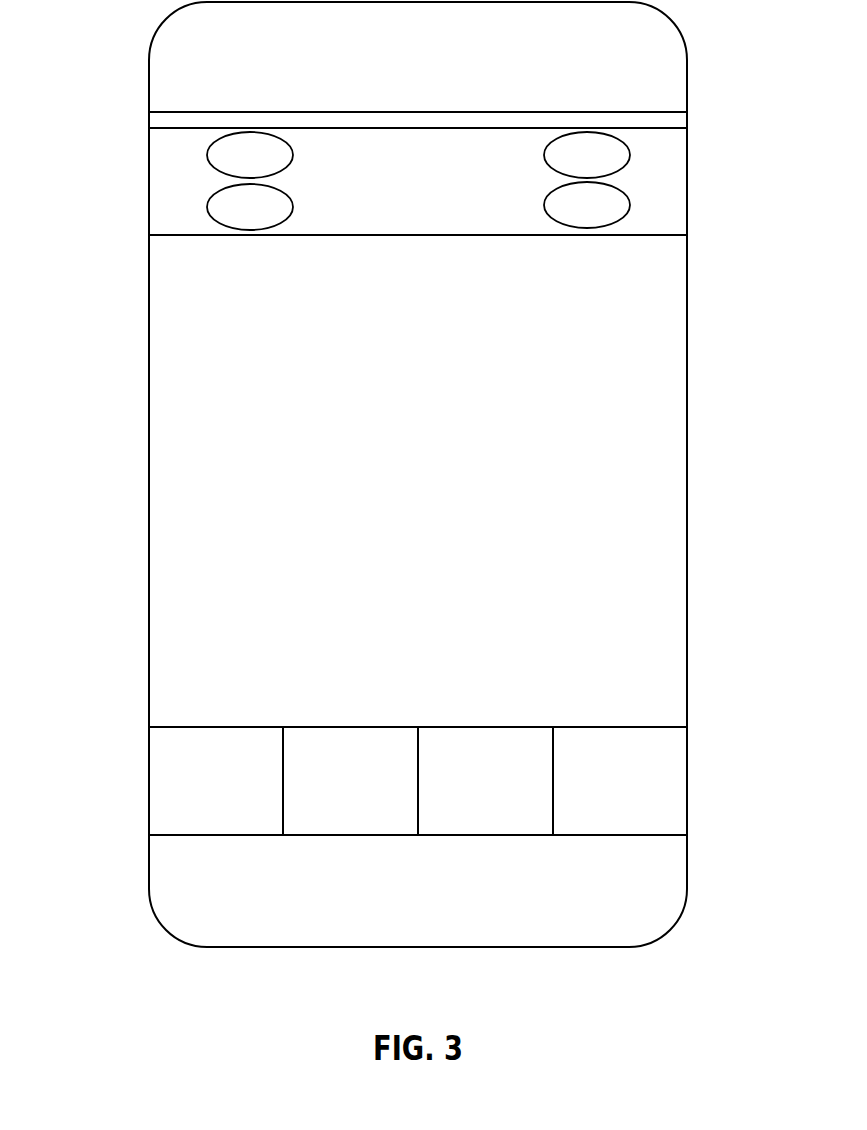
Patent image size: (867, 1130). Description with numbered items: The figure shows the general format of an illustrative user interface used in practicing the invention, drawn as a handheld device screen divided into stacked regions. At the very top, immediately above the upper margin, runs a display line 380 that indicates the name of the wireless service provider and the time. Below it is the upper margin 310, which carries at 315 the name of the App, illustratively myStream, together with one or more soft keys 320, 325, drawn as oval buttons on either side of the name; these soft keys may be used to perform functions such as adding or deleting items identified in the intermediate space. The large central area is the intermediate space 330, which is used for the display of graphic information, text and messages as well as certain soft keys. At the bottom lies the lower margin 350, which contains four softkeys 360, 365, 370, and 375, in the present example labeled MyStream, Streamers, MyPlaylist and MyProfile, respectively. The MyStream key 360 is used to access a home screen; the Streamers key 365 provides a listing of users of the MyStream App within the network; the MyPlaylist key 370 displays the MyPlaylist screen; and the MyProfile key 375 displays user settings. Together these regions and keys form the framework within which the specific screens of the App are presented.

The upper margin 310 is at (162, 186).
The name of the App 315 is at (425, 202).
The soft key 320 is at (218, 224).
The soft key 325 is at (555, 135).
The intermediate space 330 is at (167, 472).
The lower margin 350 is at (148, 782).
The MyStream key 360 is at (213, 837).
The Streamers key 365 is at (350, 837).
The MyPlaylist key 370 is at (484, 837).
The MyProfile key 375 is at (627, 837).
The display line 380 is at (162, 121).